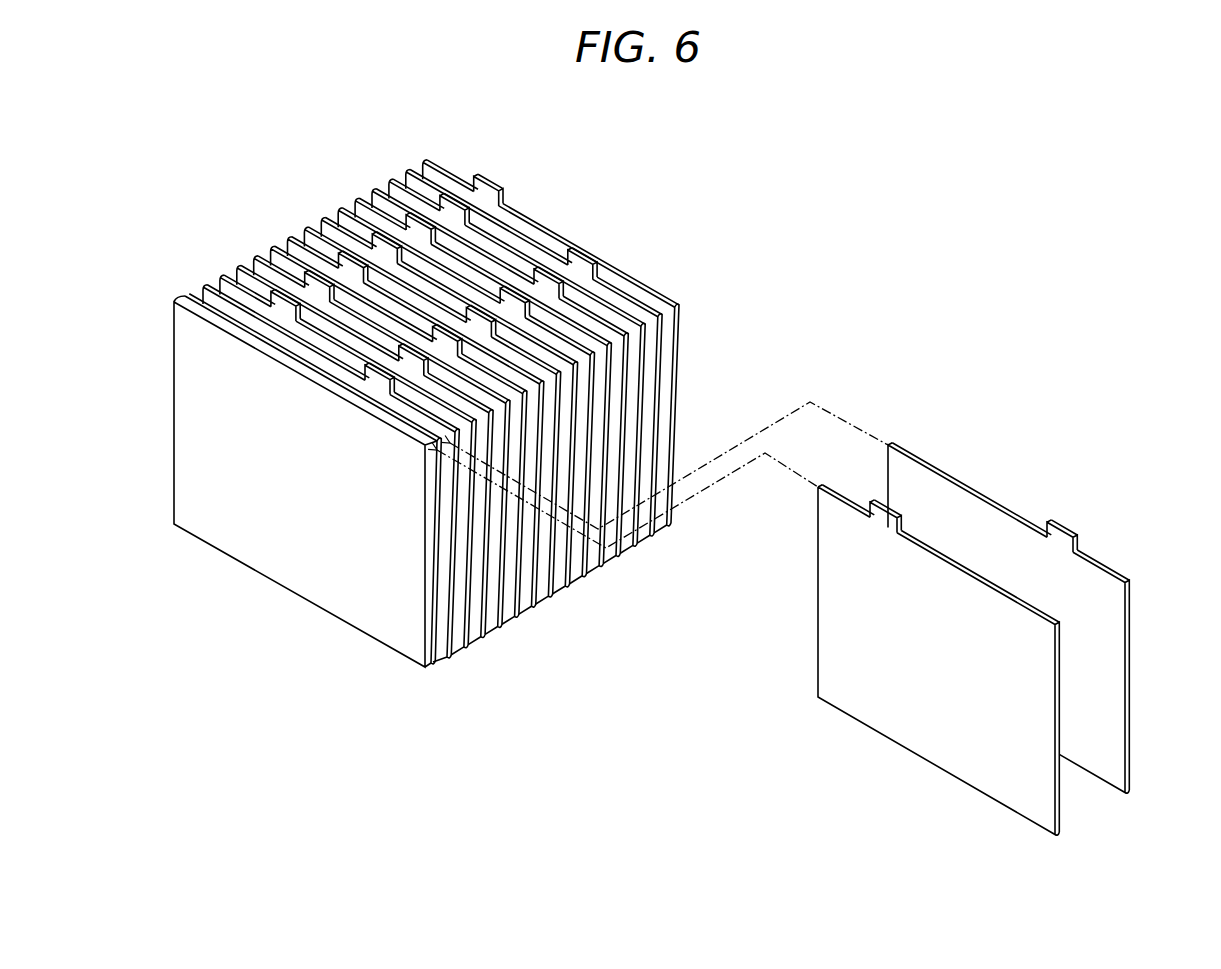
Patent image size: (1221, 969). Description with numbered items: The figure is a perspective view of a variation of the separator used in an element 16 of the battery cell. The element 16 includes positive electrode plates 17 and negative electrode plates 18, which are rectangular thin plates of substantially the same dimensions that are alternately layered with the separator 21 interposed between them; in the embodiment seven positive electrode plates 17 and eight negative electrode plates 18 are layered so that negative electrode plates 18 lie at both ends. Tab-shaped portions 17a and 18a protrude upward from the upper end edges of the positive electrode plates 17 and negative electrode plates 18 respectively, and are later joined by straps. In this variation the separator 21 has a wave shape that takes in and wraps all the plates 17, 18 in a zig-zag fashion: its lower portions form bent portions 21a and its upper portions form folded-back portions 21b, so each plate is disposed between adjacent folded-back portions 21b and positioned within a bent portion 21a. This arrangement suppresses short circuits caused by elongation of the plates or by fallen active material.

The element 16 is at (772, 261).
The positive electrode plate 17 is at (704, 452).
The tab-shaped portion 17a is at (1060, 521).
The negative electrode plate 18 is at (628, 446).
The tab-shaped portion 18a is at (873, 505).
The separator 21 is at (233, 553).
The bent portion 21a is at (442, 656).
The folded-back portion 21b is at (189, 294).